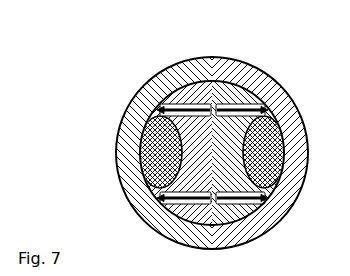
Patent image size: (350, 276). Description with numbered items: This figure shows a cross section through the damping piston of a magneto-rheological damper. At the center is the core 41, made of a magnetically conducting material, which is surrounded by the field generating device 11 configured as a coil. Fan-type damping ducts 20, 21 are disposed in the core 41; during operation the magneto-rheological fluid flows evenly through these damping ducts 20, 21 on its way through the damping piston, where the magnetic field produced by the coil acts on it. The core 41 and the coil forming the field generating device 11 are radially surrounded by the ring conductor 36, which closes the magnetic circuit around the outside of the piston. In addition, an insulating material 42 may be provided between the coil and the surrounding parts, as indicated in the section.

The field generating device 11 is at (138, 150).
The damping duct 20 is at (254, 65).
The damping duct 21 is at (290, 94).
The ring conductor 36 is at (134, 96).
The core 41 is at (223, 57).
The insulating material 42 is at (136, 131).